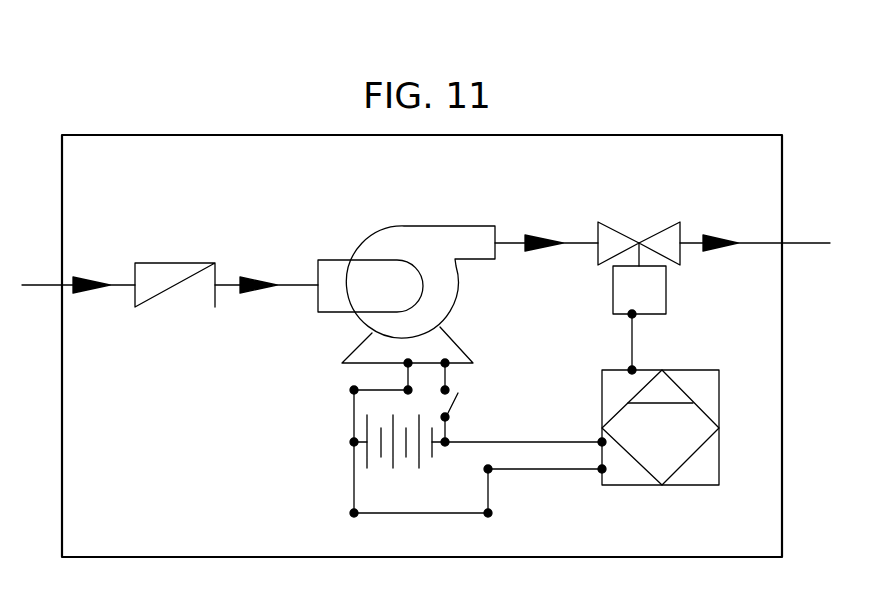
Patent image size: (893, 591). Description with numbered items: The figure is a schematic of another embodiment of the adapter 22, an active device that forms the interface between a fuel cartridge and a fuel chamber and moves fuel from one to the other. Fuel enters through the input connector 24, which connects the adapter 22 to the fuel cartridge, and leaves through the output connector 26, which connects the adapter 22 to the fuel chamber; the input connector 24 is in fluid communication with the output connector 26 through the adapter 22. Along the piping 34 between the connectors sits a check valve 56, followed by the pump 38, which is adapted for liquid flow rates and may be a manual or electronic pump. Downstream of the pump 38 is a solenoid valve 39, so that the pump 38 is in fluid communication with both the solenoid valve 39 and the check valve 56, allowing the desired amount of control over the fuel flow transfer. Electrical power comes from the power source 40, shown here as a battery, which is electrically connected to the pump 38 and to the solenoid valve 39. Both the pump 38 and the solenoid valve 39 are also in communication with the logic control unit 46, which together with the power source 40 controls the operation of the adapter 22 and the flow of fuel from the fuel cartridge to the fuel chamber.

The adapter 22 is at (254, 88).
The input connector 24 is at (53, 285).
The piping 34 is at (68, 285).
The check valve 56 is at (175, 263).
The pump 38 is at (425, 226).
The solenoid valve 39 is at (597, 230).
The output connector 26 is at (787, 243).
The power source 40 is at (368, 422).
The logic control unit 46 is at (719, 401).